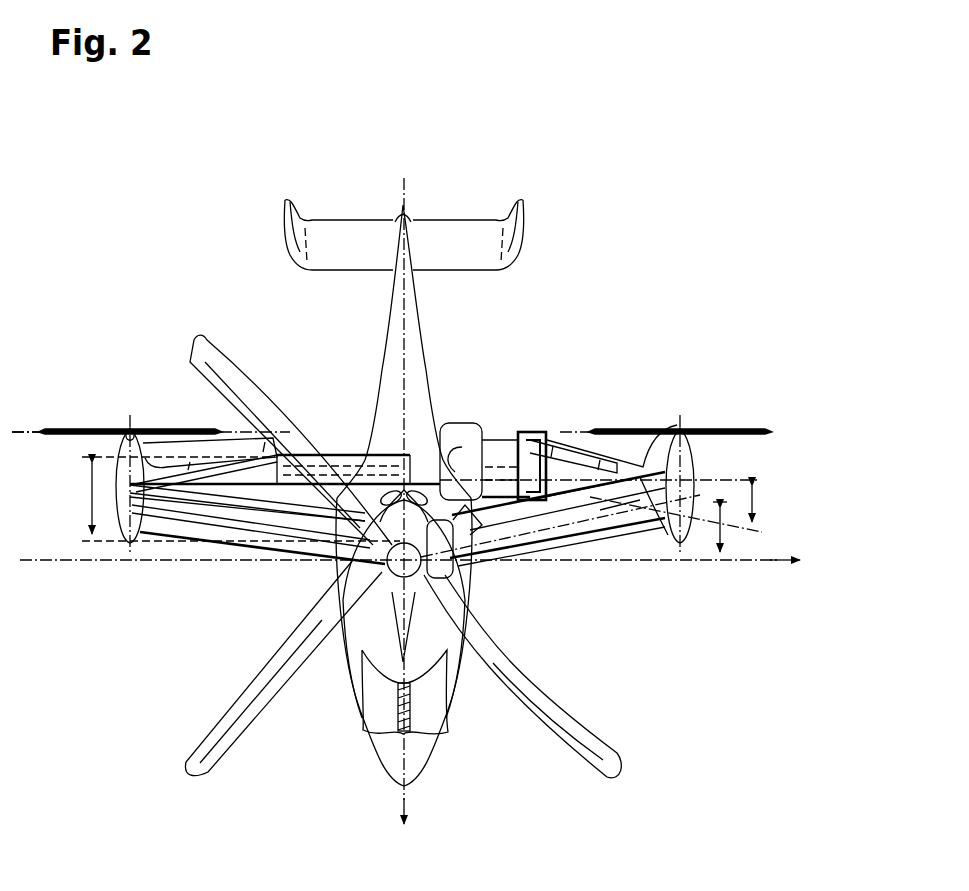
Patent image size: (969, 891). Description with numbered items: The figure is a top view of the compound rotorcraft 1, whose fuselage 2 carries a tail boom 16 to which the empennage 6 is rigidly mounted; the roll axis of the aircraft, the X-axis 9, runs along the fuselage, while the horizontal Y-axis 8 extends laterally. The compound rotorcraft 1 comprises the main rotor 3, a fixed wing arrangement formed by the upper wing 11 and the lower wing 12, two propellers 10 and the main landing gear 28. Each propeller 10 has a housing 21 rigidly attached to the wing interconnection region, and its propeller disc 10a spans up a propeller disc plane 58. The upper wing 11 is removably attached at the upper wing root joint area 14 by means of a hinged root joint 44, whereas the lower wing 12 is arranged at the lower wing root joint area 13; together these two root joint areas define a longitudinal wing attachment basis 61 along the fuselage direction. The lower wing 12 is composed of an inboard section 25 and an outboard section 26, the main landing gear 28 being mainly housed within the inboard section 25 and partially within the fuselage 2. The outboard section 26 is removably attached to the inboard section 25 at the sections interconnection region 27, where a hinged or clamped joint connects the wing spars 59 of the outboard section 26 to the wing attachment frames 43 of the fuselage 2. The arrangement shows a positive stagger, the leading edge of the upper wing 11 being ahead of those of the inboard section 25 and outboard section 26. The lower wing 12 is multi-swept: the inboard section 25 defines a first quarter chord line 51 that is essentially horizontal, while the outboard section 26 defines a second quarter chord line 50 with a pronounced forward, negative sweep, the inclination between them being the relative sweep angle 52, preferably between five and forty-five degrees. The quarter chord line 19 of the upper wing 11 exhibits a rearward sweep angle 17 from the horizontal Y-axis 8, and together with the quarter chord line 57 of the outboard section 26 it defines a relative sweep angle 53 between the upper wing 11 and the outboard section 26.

The compound rotorcraft 1 is at (242, 292).
The fuselage 2 is at (452, 740).
The main rotor 3 is at (600, 726).
The empennage 6 is at (532, 222).
The horizontal Y-axis 8 is at (773, 568).
The X-axis 9 is at (432, 805).
The propeller 10 is at (93, 428).
The propeller disc 10a is at (167, 428).
The upper wing 11 is at (600, 543).
The lower wing 12 is at (580, 425).
The lower wing root joint area 13 is at (500, 458).
The upper wing root joint area 14 is at (462, 550).
The tail boom 16 is at (392, 300).
The rearward sweep angle 17 is at (712, 535).
The quarter chord line 19 is at (573, 538).
The housing 21 is at (113, 545).
The inboard section 25 is at (521, 432).
The outboard section 26 is at (620, 455).
The sections interconnection region 27 is at (545, 432).
The main landing gear 28 is at (476, 422).
The wing attachment frames 43 is at (384, 447).
The hinged root joint 44 is at (362, 575).
The second quarter chord line 50 is at (680, 438).
The first quarter chord line 51 is at (730, 462).
The relative sweep angle 52 is at (760, 498).
The relative sweep angle 53 is at (630, 560).
The quarter chord line 57 is at (738, 527).
The propeller disc plane 58 is at (27, 428).
The wing spars 59 is at (172, 530).
The longitudinal wing attachment basis 61 is at (85, 497).